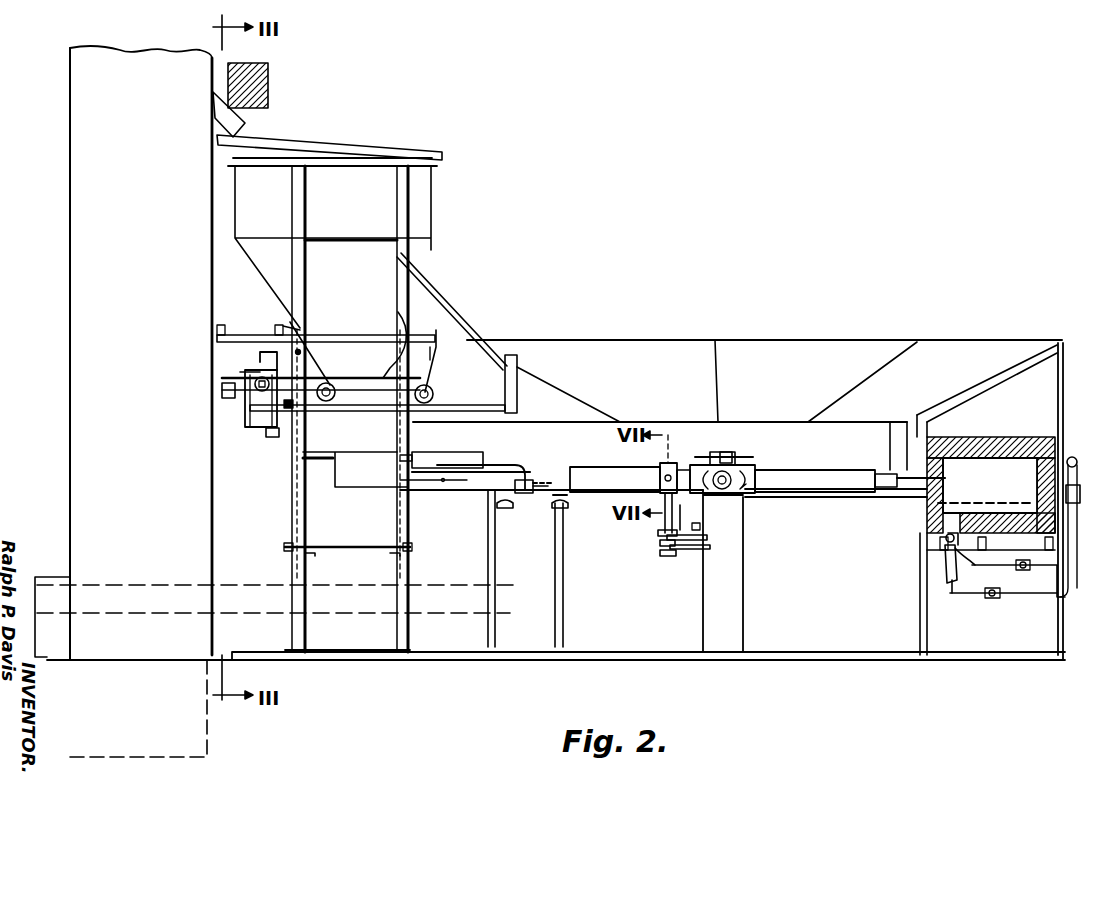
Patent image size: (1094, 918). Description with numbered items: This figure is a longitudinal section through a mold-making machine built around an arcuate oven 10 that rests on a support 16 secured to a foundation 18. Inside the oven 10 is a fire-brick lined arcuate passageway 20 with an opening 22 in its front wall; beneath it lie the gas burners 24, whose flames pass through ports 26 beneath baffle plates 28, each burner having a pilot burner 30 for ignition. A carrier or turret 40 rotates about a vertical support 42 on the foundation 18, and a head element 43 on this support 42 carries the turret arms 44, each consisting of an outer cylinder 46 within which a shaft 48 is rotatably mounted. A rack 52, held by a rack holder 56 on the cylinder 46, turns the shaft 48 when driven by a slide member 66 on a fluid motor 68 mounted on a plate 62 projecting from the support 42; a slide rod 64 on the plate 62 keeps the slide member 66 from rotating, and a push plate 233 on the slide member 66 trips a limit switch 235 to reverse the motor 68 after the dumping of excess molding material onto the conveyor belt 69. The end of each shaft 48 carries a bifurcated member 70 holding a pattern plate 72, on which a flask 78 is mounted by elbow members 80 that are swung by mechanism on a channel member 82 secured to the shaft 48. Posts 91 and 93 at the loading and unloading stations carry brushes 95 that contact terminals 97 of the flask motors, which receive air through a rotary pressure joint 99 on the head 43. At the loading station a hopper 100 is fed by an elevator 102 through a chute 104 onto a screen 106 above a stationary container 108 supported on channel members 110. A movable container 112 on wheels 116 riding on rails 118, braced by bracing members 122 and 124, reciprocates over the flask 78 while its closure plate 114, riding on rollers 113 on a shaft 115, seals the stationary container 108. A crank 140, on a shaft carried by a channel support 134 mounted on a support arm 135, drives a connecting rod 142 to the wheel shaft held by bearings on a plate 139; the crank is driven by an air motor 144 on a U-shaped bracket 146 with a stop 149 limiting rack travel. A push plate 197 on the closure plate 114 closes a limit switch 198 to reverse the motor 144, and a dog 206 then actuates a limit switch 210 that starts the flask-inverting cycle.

The oven 10 is at (843, 352).
The support 16 is at (918, 582).
The foundation 18 is at (858, 660).
The arcuate passageway 20 is at (998, 460).
The opening 22 is at (935, 478).
The gas burner 24 is at (945, 556).
The port 26 is at (920, 522).
The baffle plate 28 is at (957, 504).
The pilot burner 30 is at (958, 560).
The carrier or turret 40 is at (772, 460).
The support 42 is at (738, 588).
The head element 43 is at (748, 457).
The turret arm 44 is at (583, 470).
The outer cylinder 46 is at (630, 466).
The shaft 48 is at (540, 478).
The rack 52 is at (664, 525).
The rack holder 56 is at (674, 464).
The plate 62 is at (688, 550).
The slide rod 64 is at (683, 526).
The slide member 66 is at (660, 538).
The fluid motor 68 is at (662, 554).
The conveyor belt 69 is at (518, 622).
The bifurcated member 70 is at (462, 493).
The pattern plate 72 is at (436, 456).
The flask 78 is at (486, 462).
The elbow member 80 is at (516, 463).
The channel member 82 is at (548, 490).
The post 91 is at (496, 624).
The post 93 is at (562, 614).
The brush 95 is at (497, 510).
The terminal 97 is at (500, 507).
The rotary pressure joint 99 is at (732, 455).
The hopper 100 is at (446, 195).
The elevator 102 is at (88, 241).
The chute 104 is at (248, 124).
The screen 106 is at (352, 144).
The stationary container 108 is at (425, 254).
The channel member 110 is at (394, 205).
The movable container 112 is at (427, 372).
The roller 113 is at (304, 342).
The closure plate 114 is at (236, 336).
The shaft 115 is at (398, 316).
The wheel 116 is at (328, 384).
The rail 118 is at (458, 410).
The bracing member 122 is at (438, 308).
The bracing member 124 is at (517, 364).
The channel support 134 is at (244, 373).
The support arm 135 is at (340, 400).
The plate 139 is at (294, 404).
The crank member 140 is at (228, 380).
The connecting rod 142 is at (228, 398).
The air motor 144 is at (270, 440).
The U-shaped bracket 146 is at (257, 428).
The stop 149 is at (266, 352).
The push plate 197 is at (221, 324).
The limit switch 198 is at (286, 325).
The dog 206 is at (302, 350).
The limit switch 210 is at (437, 333).
The push plate 233 is at (712, 546).
The limit switch 235 is at (707, 523).